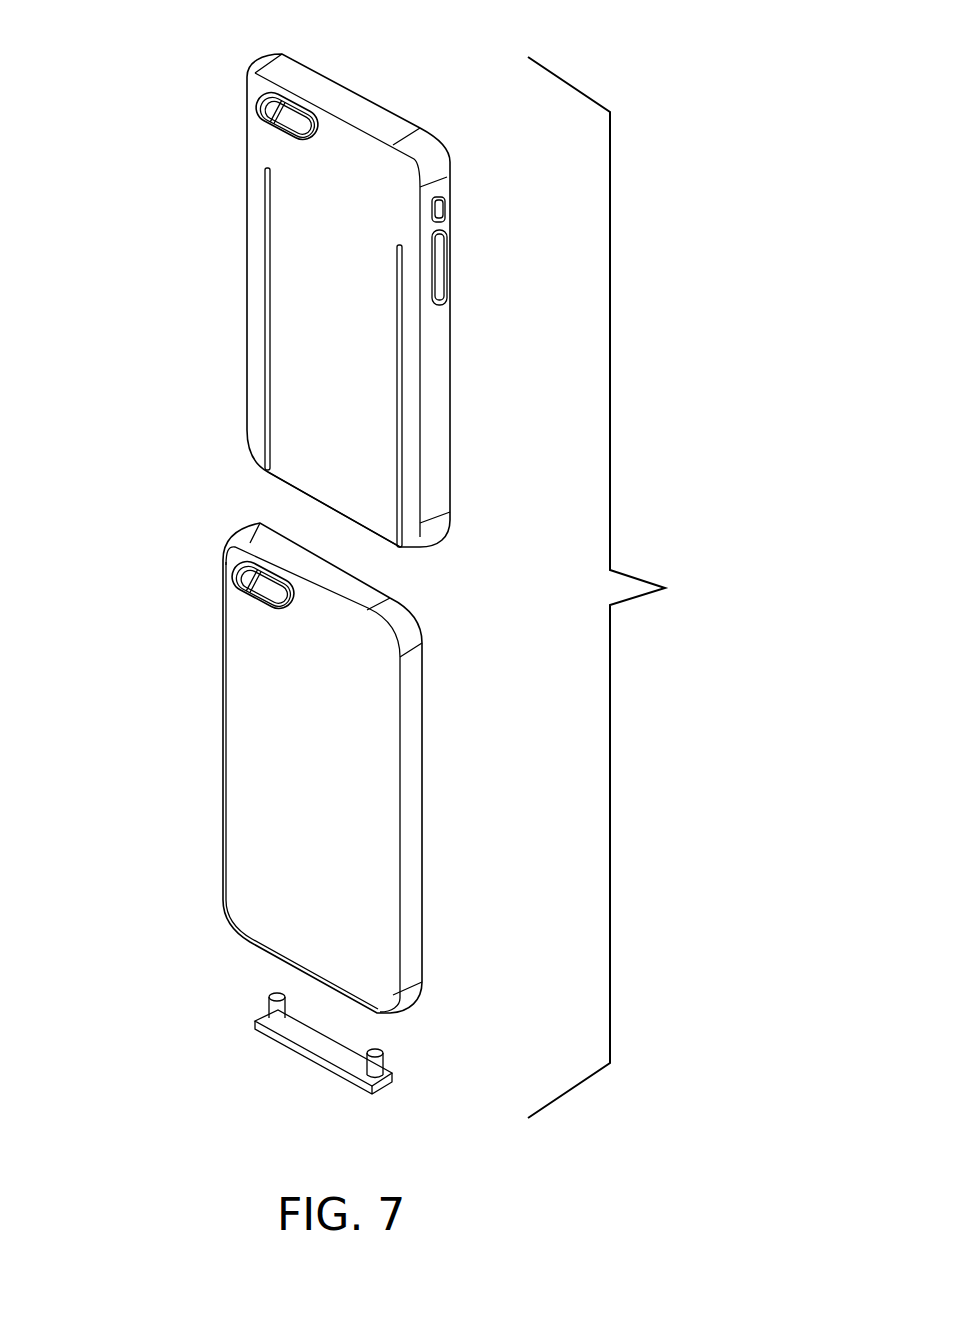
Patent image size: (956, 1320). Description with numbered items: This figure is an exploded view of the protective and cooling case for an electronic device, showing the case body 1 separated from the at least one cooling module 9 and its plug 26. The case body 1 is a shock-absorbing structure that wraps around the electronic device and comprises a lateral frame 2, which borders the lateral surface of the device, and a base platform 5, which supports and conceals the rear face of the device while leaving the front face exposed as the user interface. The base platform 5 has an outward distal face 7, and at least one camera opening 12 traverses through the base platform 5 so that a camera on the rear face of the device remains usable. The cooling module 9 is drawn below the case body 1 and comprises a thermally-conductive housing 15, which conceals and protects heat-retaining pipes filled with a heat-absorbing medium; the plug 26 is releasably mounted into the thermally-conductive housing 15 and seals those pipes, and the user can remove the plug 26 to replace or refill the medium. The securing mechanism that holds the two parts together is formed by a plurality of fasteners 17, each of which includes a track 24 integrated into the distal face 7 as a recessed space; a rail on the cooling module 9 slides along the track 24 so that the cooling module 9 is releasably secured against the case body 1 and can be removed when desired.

The case body 1 is at (163, 30).
The lateral frame 2 is at (468, 269).
The base platform 5 is at (232, 295).
The distal face 7 is at (343, 367).
The cooling module 9 is at (175, 549).
The camera opening 12 is at (278, 118).
The thermally-conductive housing 15 is at (229, 700).
The fasteners 17 is at (333, 357).
The track 24 is at (268, 222).
The plug 26 is at (387, 1078).